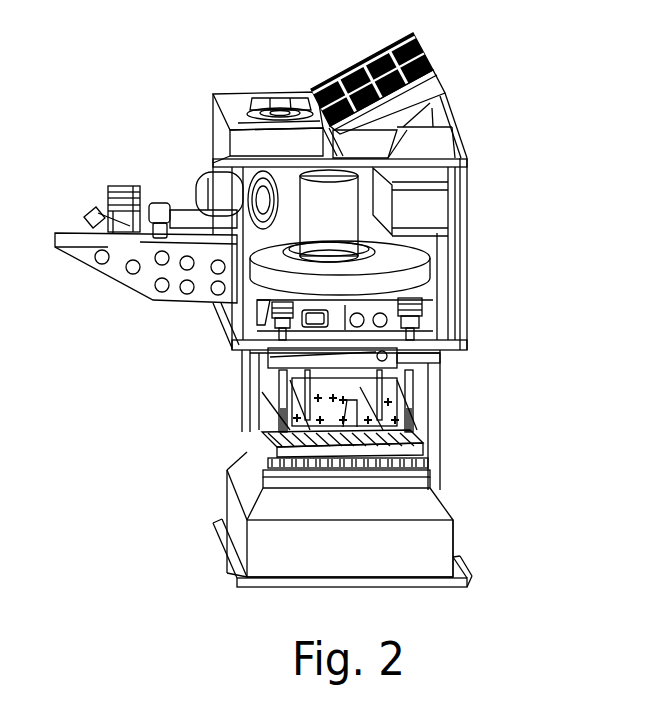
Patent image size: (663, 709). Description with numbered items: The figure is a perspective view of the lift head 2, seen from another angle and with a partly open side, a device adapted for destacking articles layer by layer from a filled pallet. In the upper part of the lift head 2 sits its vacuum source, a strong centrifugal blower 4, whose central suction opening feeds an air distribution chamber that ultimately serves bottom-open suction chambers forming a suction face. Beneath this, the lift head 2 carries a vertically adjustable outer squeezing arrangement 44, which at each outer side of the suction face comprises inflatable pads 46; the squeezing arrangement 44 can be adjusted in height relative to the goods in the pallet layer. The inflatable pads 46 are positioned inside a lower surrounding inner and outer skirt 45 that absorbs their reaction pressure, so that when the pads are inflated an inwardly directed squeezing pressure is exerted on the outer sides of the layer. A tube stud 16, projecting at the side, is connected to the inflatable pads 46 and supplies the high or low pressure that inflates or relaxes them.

The lift head 2 is at (478, 212).
The centrifugal blower 4 is at (430, 253).
The tube stud 16 is at (98, 220).
The squeezing arrangement 44 is at (208, 493).
The inner and outer skirt 45 is at (388, 547).
The inflatable pads 46 is at (238, 528).